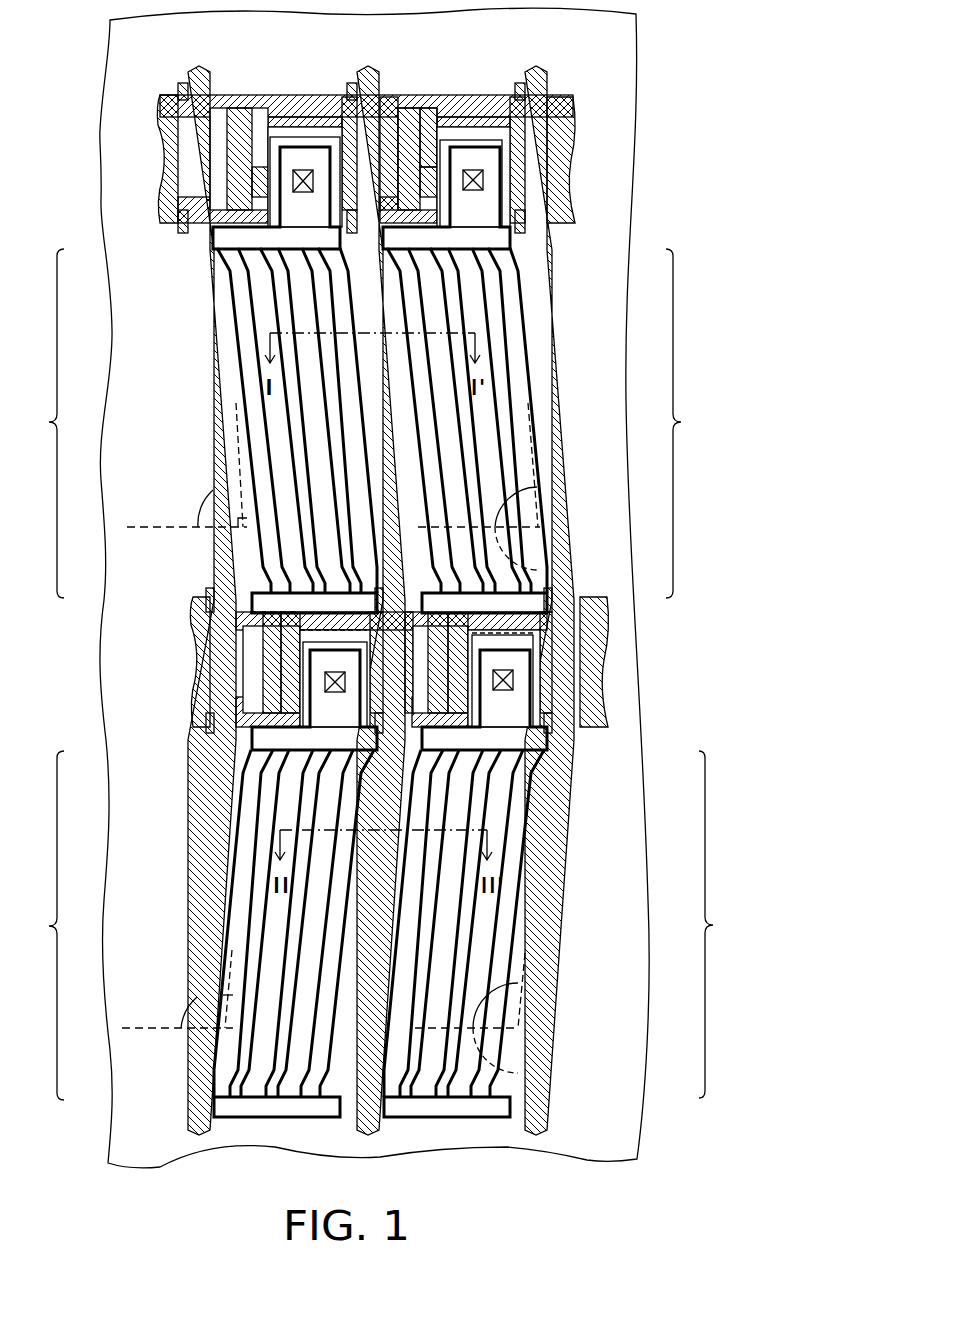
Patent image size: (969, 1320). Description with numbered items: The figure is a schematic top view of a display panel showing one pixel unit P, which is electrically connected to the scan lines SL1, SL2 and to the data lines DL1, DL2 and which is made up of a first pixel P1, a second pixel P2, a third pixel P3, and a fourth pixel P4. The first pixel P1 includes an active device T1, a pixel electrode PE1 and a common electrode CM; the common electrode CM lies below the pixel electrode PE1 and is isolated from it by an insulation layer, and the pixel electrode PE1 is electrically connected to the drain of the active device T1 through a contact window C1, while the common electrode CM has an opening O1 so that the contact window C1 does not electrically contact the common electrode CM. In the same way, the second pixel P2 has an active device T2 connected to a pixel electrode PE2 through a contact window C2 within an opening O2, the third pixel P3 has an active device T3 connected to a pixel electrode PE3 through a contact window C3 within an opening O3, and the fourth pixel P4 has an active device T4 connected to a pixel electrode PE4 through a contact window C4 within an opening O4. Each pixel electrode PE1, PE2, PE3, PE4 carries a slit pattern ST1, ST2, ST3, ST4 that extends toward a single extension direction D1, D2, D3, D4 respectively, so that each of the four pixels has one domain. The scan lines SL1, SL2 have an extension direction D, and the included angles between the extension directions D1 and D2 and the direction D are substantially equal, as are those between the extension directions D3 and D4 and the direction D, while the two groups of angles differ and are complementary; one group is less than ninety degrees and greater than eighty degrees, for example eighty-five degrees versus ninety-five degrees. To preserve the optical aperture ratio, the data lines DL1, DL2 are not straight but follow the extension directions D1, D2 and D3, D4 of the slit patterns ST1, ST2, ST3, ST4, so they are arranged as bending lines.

The common electrode CM is at (637, 137).
The scan line SL1 is at (162, 122).
The scan line SL2 is at (207, 665).
The data line DL1 is at (200, 83).
The data line DL2 is at (367, 83).
The active device T1 is at (243, 97).
The active device T2 is at (412, 97).
The active device T3 is at (207, 633).
The active device T4 is at (597, 643).
The contact window C1 is at (307, 167).
The contact window C2 is at (475, 168).
The contact window C3 is at (333, 693).
The contact window C4 is at (517, 680).
The opening O1 is at (323, 137).
The opening O2 is at (493, 140).
The opening O3 is at (333, 720).
The opening O4 is at (533, 713).
The pixel electrode PE1 is at (248, 337).
The pixel electrode PE2 is at (498, 348).
The pixel electrode PE3 is at (268, 842).
The pixel electrode PE4 is at (505, 846).
The slit pattern ST1 is at (255, 292).
The slit pattern ST2 is at (473, 292).
The slit pattern ST3 is at (285, 798).
The slit pattern ST4 is at (502, 798).
The extension direction D1 is at (232, 424).
The extension direction D2 is at (540, 436).
The extension direction D3 is at (218, 973).
The extension direction D4 is at (540, 983).
The extension direction D is at (172, 530).
The first pixel P1 is at (41, 423).
The second pixel P2 is at (695, 423).
The third pixel P3 is at (41, 925).
The fourth pixel P4 is at (726, 924).
The pixel unit P is at (712, 1180).